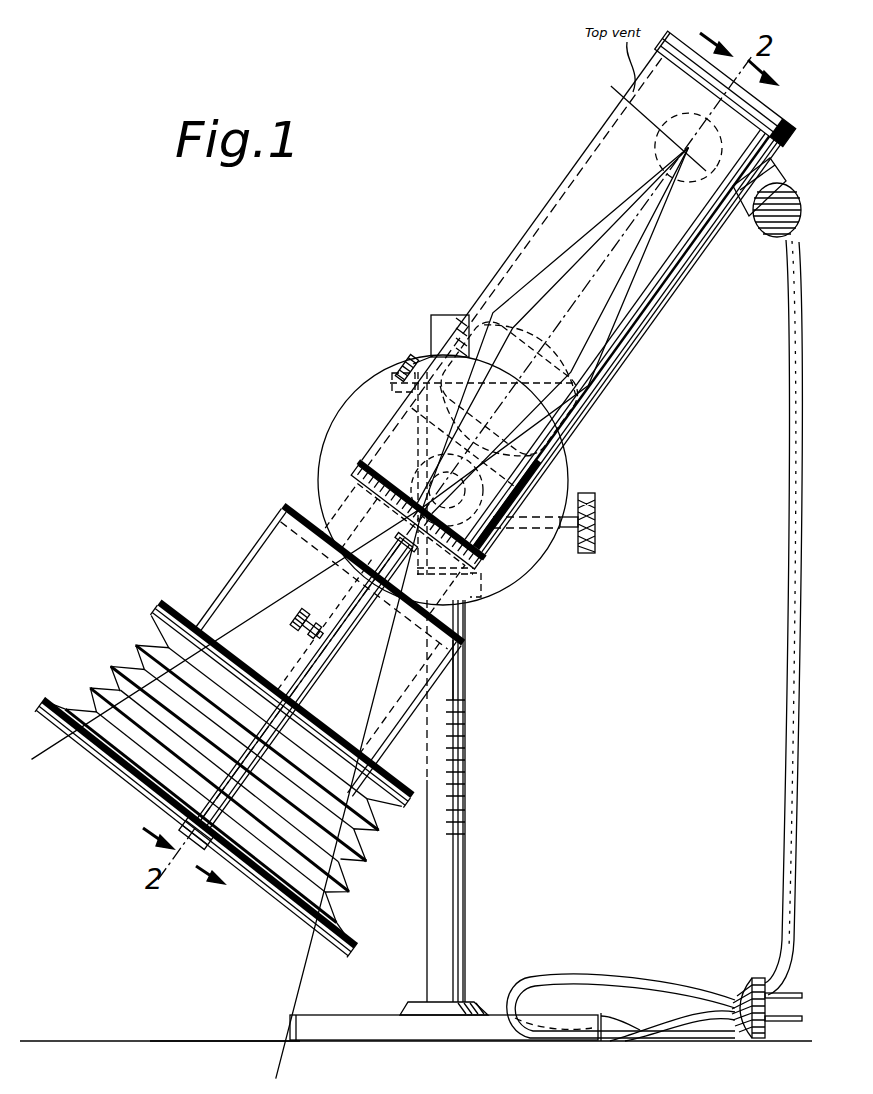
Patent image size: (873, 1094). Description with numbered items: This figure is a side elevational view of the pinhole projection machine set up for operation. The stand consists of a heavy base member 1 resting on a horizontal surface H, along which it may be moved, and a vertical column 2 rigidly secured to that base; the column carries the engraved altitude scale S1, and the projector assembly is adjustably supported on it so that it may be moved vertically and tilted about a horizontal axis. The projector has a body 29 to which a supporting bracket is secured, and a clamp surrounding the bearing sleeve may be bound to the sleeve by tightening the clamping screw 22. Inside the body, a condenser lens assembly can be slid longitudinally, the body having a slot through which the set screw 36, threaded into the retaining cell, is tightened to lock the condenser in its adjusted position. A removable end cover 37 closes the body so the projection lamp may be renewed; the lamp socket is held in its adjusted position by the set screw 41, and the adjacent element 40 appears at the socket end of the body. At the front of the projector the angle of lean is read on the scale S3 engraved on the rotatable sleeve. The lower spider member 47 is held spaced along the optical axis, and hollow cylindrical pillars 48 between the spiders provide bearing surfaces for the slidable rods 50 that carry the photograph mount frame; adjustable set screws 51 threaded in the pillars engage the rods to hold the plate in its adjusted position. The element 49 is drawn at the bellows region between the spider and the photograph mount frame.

The base member 1 is at (358, 1013).
The vertical column 2 is at (466, 891).
The clamping screw 22 is at (596, 526).
The body 29 is at (507, 271).
The set screw 36 is at (400, 360).
The end cover 37 is at (703, 48).
The switch knob 40 is at (760, 233).
The set screw 41 is at (770, 176).
The lower spider member 47 is at (313, 728).
The hollow cylindrical pillars 48 is at (313, 692).
The bellows 49 is at (134, 648).
The slidable rods 50 is at (215, 800).
The adjustable set screws 51 is at (297, 629).
The altitude scale S1 is at (466, 696).
The scale S3 is at (386, 494).
The horizontal surface H is at (214, 1040).